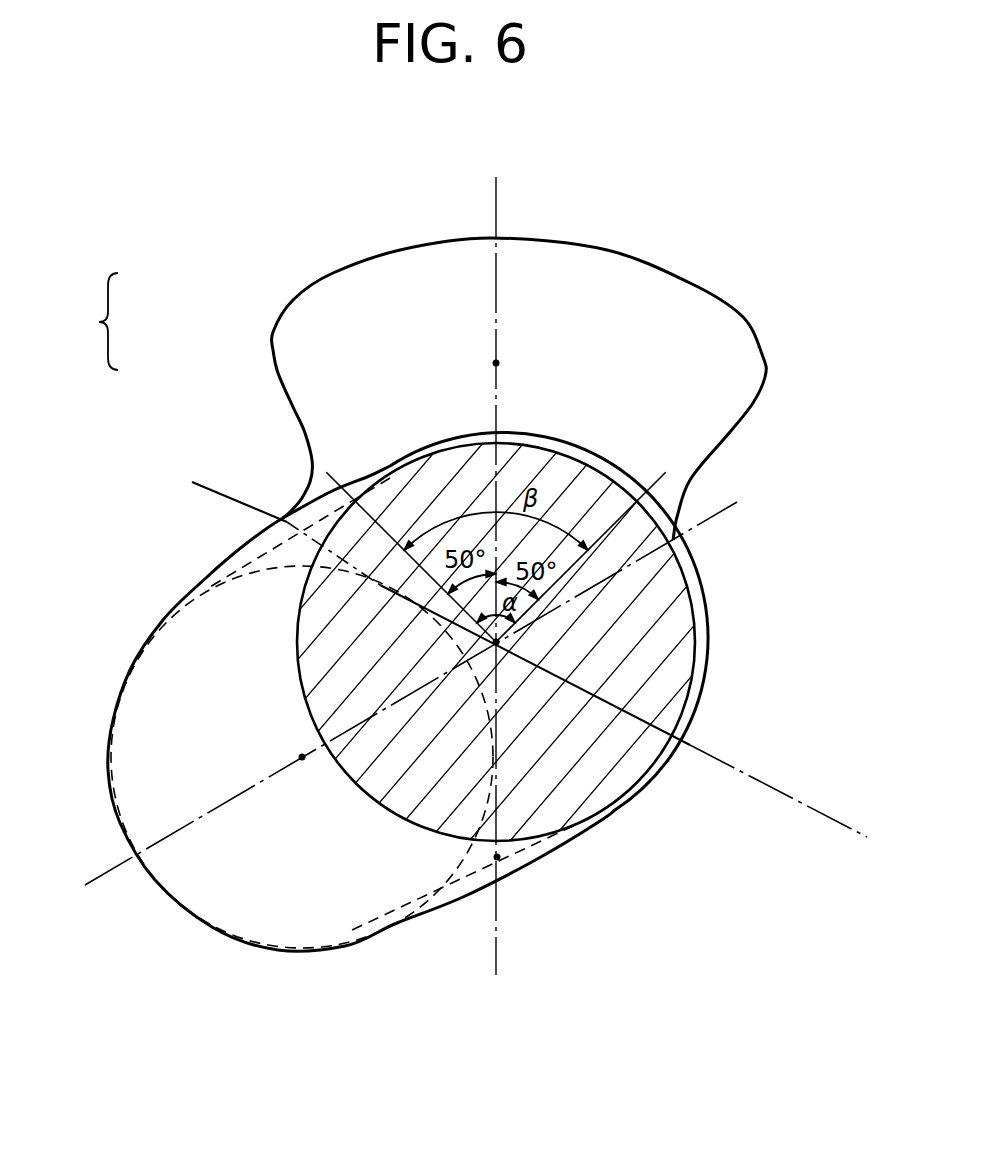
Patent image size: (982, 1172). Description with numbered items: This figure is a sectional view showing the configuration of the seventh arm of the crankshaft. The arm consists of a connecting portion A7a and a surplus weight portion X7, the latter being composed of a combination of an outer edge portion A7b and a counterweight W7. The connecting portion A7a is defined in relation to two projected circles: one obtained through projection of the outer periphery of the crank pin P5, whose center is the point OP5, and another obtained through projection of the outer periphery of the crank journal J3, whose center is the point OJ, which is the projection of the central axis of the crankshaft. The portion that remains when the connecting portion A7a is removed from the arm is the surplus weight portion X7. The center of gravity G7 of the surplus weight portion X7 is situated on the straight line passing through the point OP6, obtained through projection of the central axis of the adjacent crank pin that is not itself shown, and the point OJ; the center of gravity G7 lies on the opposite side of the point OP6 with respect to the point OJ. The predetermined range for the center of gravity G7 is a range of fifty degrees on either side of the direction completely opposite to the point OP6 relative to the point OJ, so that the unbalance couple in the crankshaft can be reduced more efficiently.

The surplus weight portion X7 is at (90, 321).
The counterweight W7 is at (353, 352).
The outer edge portion A7b is at (283, 518).
The connecting portion A7a is at (297, 560).
The crank pin P5 is at (162, 623).
The point OP5 (center of circle P5') OP5 is at (271, 744).
The center of gravity G7 is at (522, 361).
The point OJ (projection of crankshaft central axis) OJ is at (519, 652).
The crank journal J3 is at (616, 805).
The point OP6 (projection of crank pin P6 central axis) OP6 is at (497, 857).